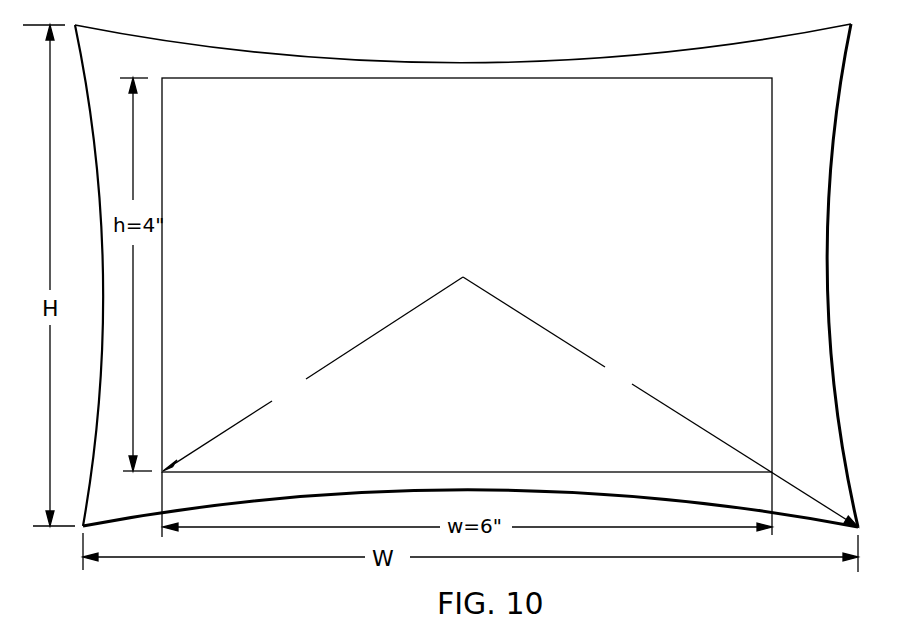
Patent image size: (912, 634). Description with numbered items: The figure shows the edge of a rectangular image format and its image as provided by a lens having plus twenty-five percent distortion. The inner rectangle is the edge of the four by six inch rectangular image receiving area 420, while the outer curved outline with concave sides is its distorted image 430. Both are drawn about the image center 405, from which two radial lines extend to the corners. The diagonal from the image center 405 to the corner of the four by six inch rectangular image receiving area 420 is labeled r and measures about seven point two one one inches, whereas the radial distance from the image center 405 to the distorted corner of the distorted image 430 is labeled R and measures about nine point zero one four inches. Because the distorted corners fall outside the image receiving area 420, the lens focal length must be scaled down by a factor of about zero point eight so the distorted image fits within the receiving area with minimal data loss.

The image center 405 is at (463, 277).
The rectangular image receiving area 420 is at (162, 262).
The distorted image 430 is at (93, 118).